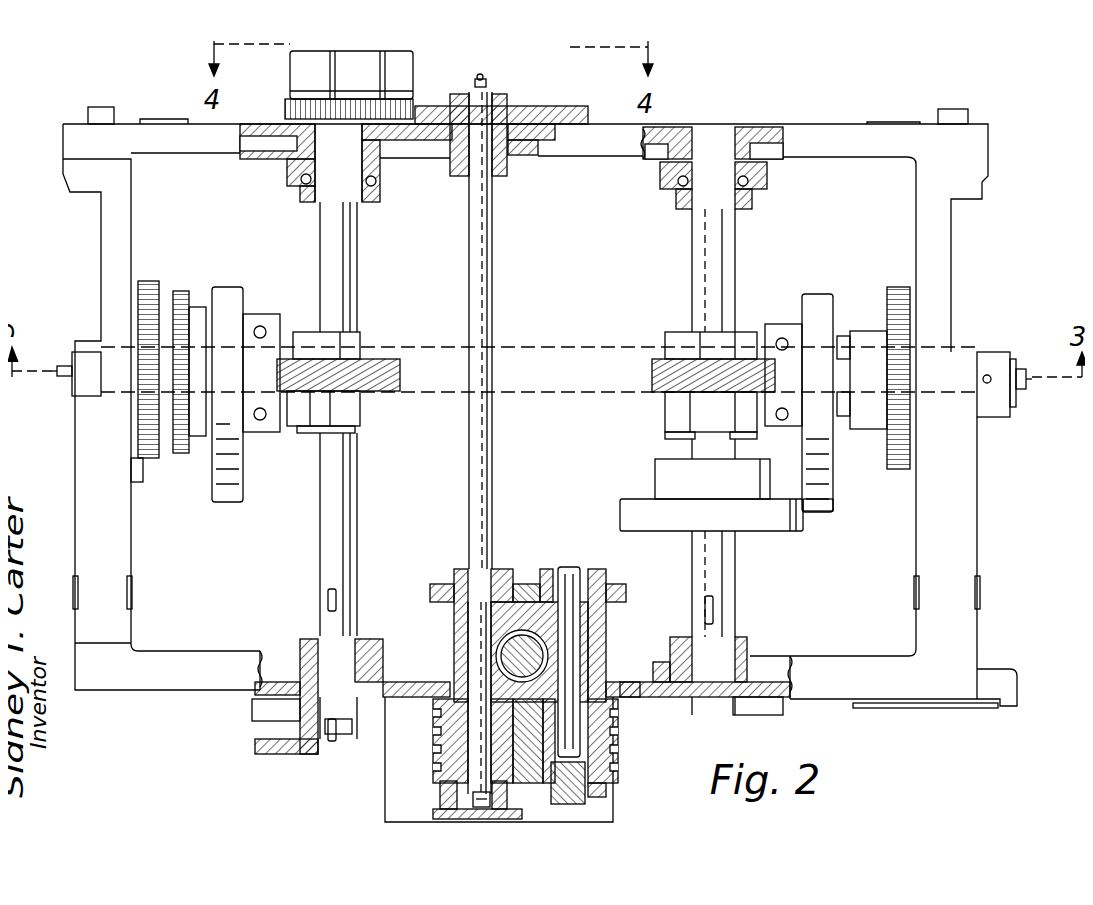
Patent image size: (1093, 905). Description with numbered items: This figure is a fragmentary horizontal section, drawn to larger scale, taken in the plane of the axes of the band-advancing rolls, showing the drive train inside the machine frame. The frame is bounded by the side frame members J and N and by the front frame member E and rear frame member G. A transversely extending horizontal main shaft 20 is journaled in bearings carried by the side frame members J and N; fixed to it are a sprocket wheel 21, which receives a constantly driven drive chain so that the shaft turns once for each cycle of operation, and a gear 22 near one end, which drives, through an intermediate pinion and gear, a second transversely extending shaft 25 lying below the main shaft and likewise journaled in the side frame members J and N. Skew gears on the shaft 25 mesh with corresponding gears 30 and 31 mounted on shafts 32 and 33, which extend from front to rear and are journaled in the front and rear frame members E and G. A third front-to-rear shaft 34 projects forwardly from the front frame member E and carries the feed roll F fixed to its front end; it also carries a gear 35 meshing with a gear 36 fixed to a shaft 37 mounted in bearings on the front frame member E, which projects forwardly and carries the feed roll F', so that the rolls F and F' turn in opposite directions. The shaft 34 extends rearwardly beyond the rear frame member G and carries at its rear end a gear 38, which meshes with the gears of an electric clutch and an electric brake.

The main shaft 20 is at (825, 385).
The sprocket wheel 21 is at (185, 294).
The gear 22 is at (152, 282).
The second shaft 25 is at (537, 366).
The gear 30 is at (393, 361).
The gear 31 is at (285, 110).
The shaft 32 is at (350, 483).
The shaft 33 is at (722, 570).
The third shaft 34 is at (483, 485).
The gear 35 is at (497, 570).
The gear 36 is at (548, 572).
The shaft 37 is at (570, 627).
The gear 38 is at (547, 112).
The front frame member E is at (220, 684).
The feed roll F is at (447, 750).
The feed roll F' is at (626, 748).
The rear frame member G is at (820, 126).
The side frame member J is at (74, 445).
The side frame member N is at (968, 460).